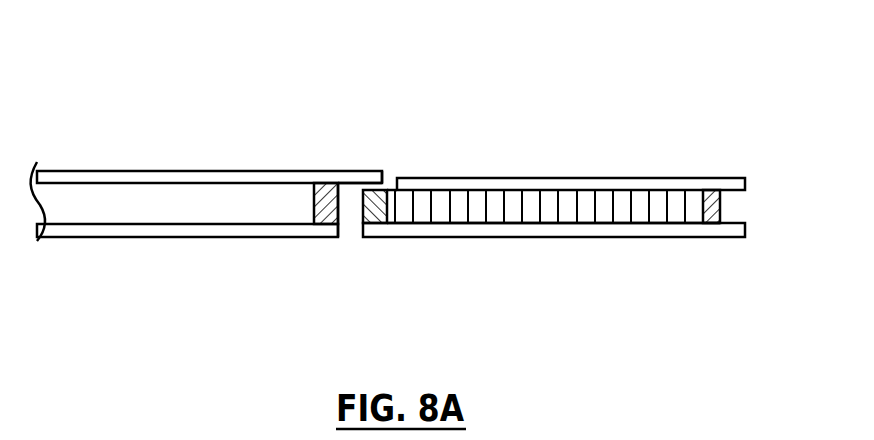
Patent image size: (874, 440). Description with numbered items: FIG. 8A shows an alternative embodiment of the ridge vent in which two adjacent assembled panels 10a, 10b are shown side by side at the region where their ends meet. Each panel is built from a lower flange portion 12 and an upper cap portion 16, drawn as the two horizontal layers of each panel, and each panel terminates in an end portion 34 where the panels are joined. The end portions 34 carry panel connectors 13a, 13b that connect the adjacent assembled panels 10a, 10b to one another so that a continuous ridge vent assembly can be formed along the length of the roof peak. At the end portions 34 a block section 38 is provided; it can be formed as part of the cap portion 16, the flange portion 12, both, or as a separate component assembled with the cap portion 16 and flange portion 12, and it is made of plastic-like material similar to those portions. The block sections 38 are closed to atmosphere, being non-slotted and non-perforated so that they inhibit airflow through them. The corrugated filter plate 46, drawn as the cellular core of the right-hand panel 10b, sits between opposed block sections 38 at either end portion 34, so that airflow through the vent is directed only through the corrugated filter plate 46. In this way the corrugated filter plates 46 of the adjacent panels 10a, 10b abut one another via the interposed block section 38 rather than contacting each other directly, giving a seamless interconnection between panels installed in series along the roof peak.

The assembled panel 10a is at (217, 136).
The assembled panel 10b is at (633, 128).
The flange portion 12 is at (167, 231).
The panel connector 13a is at (374, 170).
The panel connector 13b is at (393, 178).
The cap portion 16 is at (255, 178).
The end portion 34 is at (327, 238).
The block section 38 is at (323, 185).
The corrugated filter plate 46 is at (583, 206).